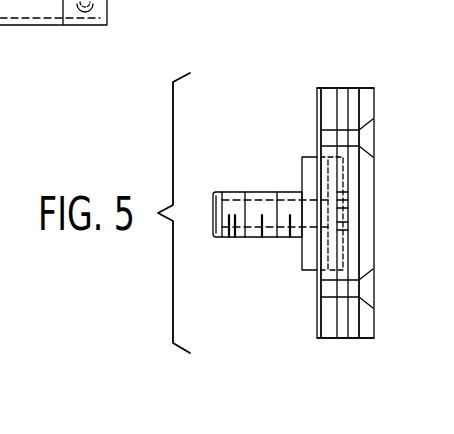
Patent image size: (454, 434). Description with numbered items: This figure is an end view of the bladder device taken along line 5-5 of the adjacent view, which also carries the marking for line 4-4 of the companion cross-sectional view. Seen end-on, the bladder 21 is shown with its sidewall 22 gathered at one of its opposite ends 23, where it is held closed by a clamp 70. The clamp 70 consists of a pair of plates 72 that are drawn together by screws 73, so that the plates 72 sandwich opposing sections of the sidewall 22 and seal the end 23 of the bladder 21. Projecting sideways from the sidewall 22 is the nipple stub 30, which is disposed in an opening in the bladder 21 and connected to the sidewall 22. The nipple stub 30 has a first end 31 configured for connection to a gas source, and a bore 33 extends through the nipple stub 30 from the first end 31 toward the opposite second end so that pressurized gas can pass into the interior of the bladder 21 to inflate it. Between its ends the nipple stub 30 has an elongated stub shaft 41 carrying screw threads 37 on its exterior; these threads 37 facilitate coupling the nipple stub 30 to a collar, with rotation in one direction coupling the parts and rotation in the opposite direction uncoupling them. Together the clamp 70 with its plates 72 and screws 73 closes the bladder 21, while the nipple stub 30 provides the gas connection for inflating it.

The line 4- 4 is at (0, 347).
The line 5- 5 is at (173, 0).
The bladder 21 is at (343, 88).
The sidewall 22 is at (342, 320).
The ends 23 is at (324, 78).
The nipple stub 30 is at (237, 238).
The first end 31 is at (222, 191).
The bore 33 is at (292, 206).
The screw threads 37 is at (290, 238).
The elongated stub shaft 41 is at (255, 236).
The clamps 70 is at (96, 36).
The plates 72 is at (330, 107).
The screws 73 is at (367, 140).